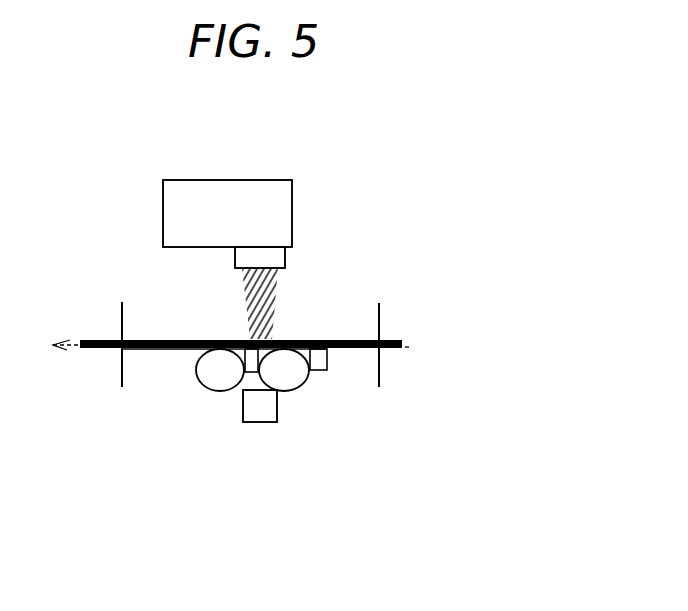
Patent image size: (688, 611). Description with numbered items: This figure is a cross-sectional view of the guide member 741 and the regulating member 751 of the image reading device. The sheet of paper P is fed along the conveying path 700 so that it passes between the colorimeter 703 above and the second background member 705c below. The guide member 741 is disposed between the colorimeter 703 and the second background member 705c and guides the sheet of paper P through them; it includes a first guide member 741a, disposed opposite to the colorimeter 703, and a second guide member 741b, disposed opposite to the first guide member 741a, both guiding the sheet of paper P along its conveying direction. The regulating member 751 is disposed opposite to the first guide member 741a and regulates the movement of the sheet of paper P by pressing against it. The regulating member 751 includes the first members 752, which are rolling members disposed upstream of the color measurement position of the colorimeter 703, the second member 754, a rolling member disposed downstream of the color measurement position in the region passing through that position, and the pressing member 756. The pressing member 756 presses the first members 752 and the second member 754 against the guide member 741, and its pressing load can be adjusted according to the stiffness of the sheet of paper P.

The colorimeter 703 is at (292, 217).
The second background member 705c is at (243, 338).
The sheet of paper P is at (100, 322).
The guide member 741 is at (347, 334).
The first guide member 741a is at (379, 322).
The second guide member 741b is at (314, 366).
The regulating member 751 is at (265, 446).
The first members 752 is at (296, 373).
The second member 754 is at (216, 373).
The pressing member 756 is at (266, 423).
The conveying path 700 is at (67, 351).